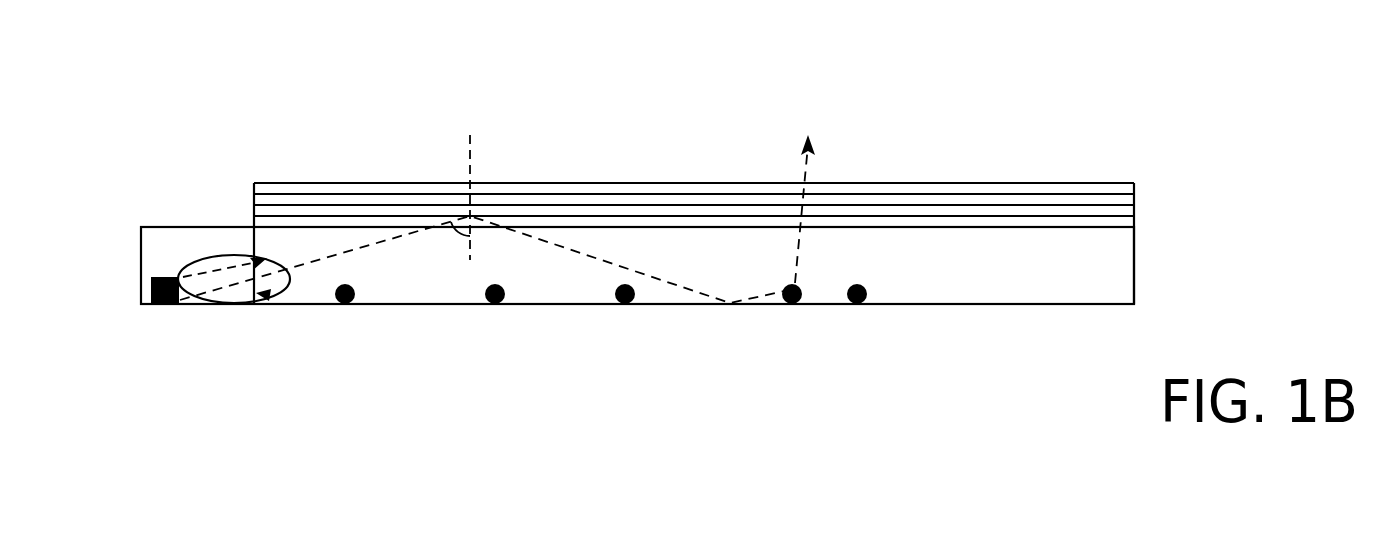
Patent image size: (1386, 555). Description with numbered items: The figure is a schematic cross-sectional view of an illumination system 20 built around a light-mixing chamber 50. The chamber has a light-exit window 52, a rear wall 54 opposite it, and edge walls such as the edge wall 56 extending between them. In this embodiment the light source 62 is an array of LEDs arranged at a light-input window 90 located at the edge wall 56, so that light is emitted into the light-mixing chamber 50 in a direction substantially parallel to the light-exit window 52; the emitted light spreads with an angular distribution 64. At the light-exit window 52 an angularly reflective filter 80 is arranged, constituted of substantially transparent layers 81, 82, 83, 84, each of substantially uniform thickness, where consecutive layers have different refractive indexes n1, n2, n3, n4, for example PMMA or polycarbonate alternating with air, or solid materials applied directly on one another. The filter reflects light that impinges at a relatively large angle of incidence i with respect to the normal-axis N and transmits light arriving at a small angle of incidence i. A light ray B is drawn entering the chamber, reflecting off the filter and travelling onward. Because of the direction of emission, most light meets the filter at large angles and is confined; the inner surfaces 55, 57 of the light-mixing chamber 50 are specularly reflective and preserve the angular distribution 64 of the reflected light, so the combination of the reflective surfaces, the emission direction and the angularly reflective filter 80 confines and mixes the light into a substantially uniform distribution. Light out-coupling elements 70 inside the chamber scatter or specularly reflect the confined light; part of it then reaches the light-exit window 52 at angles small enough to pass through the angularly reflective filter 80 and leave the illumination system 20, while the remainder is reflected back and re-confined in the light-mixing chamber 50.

The illumination system 20 is at (1102, 72).
The light-mixing chamber 50 is at (905, 277).
The light-exit window 52 is at (1088, 234).
The rear wall 54 is at (672, 305).
The inner surface 55 is at (992, 299).
The edge wall 56 is at (1135, 236).
The inner surface 57 is at (1125, 284).
The light source 62 is at (168, 305).
The angular distribution 64 is at (227, 292).
The light out-coupling elements 70 is at (495, 305).
The angularly reflective filter 80 is at (248, 183).
The transparent layer 81 is at (274, 222).
The transparent layer 82 is at (325, 210).
The transparent layer 83 is at (378, 200).
The transparent layer 84 is at (430, 188).
The light-input window 90 is at (273, 297).
The refractive index n1 is at (598, 222).
The refractive index n2 is at (650, 210).
The refractive index n3 is at (708, 200).
The refractive index n4 is at (758, 190).
The normal-axis N is at (472, 143).
The angle of incidence i is at (457, 241).
The light beam B is at (375, 245).